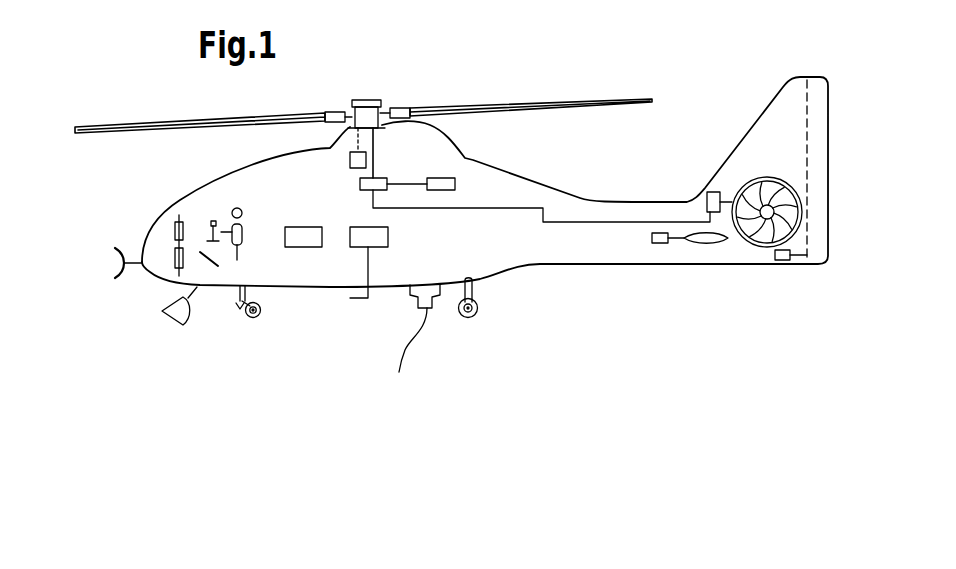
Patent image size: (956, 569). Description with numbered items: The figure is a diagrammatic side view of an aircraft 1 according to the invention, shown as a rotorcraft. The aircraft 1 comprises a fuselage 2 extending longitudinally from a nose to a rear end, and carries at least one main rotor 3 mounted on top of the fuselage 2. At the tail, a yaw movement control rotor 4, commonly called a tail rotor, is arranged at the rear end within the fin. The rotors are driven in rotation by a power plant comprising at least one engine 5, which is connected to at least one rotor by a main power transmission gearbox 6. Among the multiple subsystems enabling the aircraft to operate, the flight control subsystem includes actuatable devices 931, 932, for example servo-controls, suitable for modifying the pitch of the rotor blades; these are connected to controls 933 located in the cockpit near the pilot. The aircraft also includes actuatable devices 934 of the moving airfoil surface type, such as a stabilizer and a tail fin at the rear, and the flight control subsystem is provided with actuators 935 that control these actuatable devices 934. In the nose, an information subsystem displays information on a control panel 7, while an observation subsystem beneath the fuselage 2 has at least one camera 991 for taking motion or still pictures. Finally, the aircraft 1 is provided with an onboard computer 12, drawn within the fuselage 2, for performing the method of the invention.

The aircraft 1 is at (604, 330).
The fuselage 2 is at (514, 173).
The main rotor 3 is at (447, 87).
The yaw movement control rotor 4 is at (766, 203).
The engine 5 is at (455, 184).
The main power transmission gearbox 6 is at (360, 186).
The control panel 7 is at (175, 242).
The onboard computer 12 is at (303, 247).
The actuatable device 931 is at (350, 158).
The actuatable device 932 is at (711, 192).
The controls 933 is at (205, 262).
The actuatable device of the moving airfoil surface type 934 is at (713, 243).
The actuator 935 is at (660, 243).
The camera 991 is at (404, 355).